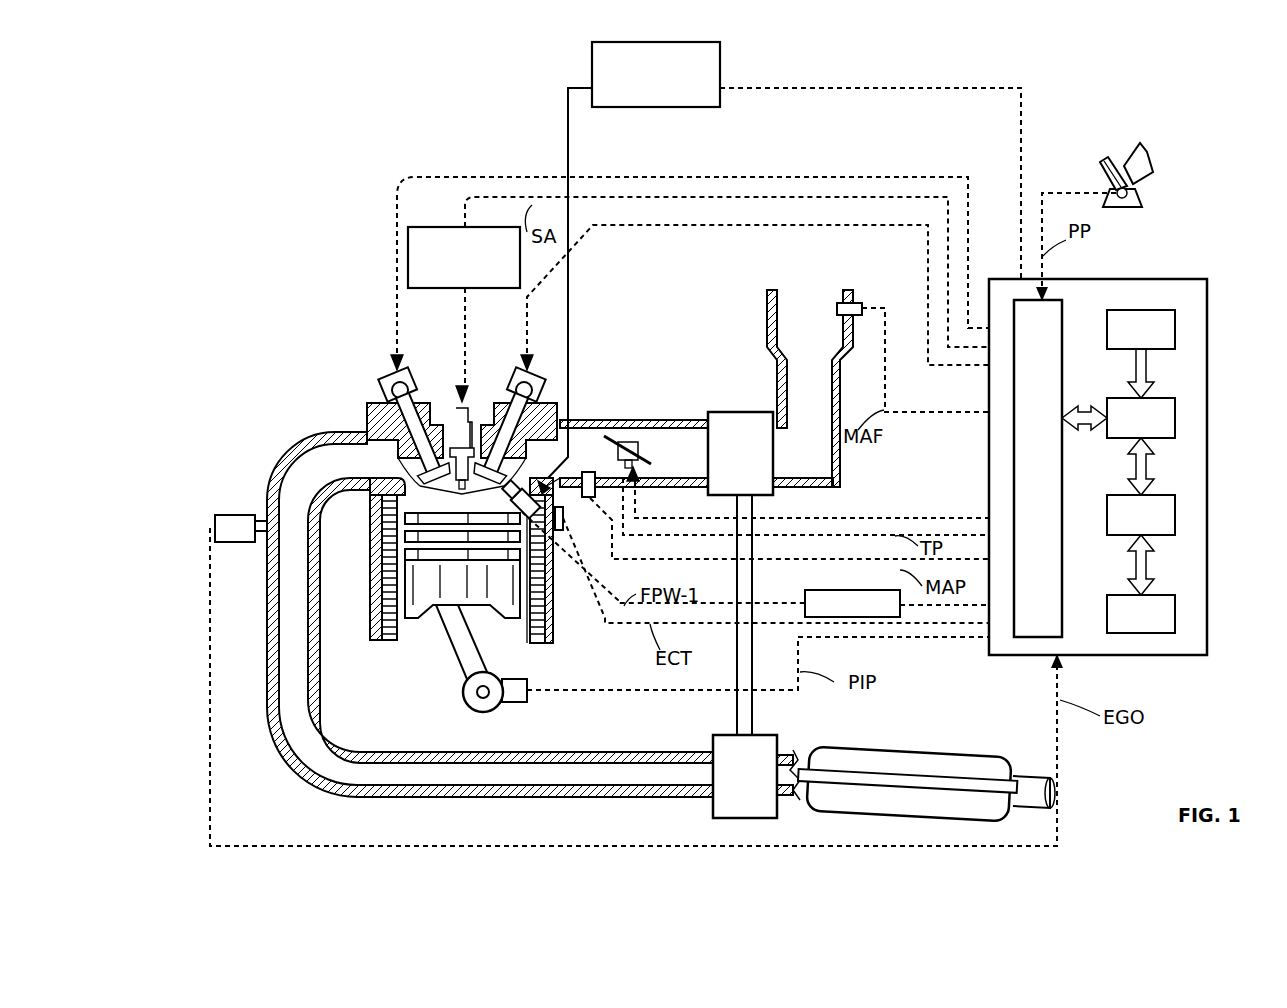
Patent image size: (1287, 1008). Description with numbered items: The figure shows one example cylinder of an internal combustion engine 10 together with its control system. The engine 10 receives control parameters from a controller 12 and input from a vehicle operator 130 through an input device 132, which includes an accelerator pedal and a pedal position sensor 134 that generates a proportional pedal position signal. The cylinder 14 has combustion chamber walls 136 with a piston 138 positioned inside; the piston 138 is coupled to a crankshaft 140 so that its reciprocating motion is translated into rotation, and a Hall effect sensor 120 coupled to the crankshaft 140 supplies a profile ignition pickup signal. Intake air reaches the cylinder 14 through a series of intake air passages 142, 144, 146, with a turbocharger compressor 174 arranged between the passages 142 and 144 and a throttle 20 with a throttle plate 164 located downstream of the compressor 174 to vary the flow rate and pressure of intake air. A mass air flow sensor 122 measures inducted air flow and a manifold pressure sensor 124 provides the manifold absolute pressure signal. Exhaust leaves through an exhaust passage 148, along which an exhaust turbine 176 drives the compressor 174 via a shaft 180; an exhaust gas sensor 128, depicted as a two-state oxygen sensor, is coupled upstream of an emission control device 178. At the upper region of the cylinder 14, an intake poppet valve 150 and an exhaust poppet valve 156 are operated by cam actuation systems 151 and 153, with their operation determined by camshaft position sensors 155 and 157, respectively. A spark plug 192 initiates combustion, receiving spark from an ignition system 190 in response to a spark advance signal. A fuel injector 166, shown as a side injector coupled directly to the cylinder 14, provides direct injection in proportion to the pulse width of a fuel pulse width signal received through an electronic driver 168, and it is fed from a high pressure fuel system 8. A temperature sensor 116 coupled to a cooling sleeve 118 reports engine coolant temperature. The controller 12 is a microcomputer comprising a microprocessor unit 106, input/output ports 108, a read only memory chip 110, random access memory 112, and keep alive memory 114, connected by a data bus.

The internal combustion engine 10 is at (196, 113).
The high pressure fuel system 8 is at (720, 52).
The ignition system 190 is at (428, 227).
The spark plug 192 is at (455, 404).
The cam actuation system 153 is at (400, 360).
The cam actuation system 151 is at (524, 360).
The exhaust poppet valve 156 is at (372, 428).
The camshaft position sensor 155 is at (553, 400).
The camshaft position sensor 157 is at (384, 388).
The intake poppet valve 150 is at (472, 468).
The exhaust passage 148 is at (490, 614).
The cylinder 14 is at (372, 527).
The cooling sleeve 118 is at (538, 598).
The combustion chamber walls 136 is at (408, 640).
The piston 138 is at (452, 615).
The crankshaft 140 is at (470, 708).
The Hall effect sensor 120 is at (520, 702).
The exhaust gas sensor 128 is at (214, 522).
The intake air passage 144 is at (696, 453).
The intake air passage 146 is at (576, 464).
The throttle plate 164 is at (590, 430).
The compressor 174 is at (727, 412).
The intake air passage 142 is at (810, 388).
The mass air flow sensor 122 is at (856, 302).
The throttle 20 is at (626, 440).
The manifold pressure sensor 124 is at (592, 498).
The temperature sensor 116 is at (565, 530).
The fuel injector 166 is at (653, 529).
The electronic driver 168 is at (806, 590).
The shaft 180 is at (755, 704).
The exhaust turbine 176 is at (712, 808).
The emission control device 178 is at (970, 756).
The controller 12 is at (1202, 278).
The input/output ports 108 is at (1064, 308).
The read only memory chip 110 is at (1177, 322).
The microprocessor unit 106 is at (1177, 412).
The random access memory 112 is at (1177, 516).
The keep alive memory 114 is at (1177, 616).
The pedal position sensor 134 is at (1135, 194).
The input device 132 is at (1100, 172).
The vehicle operator 130 is at (1148, 160).